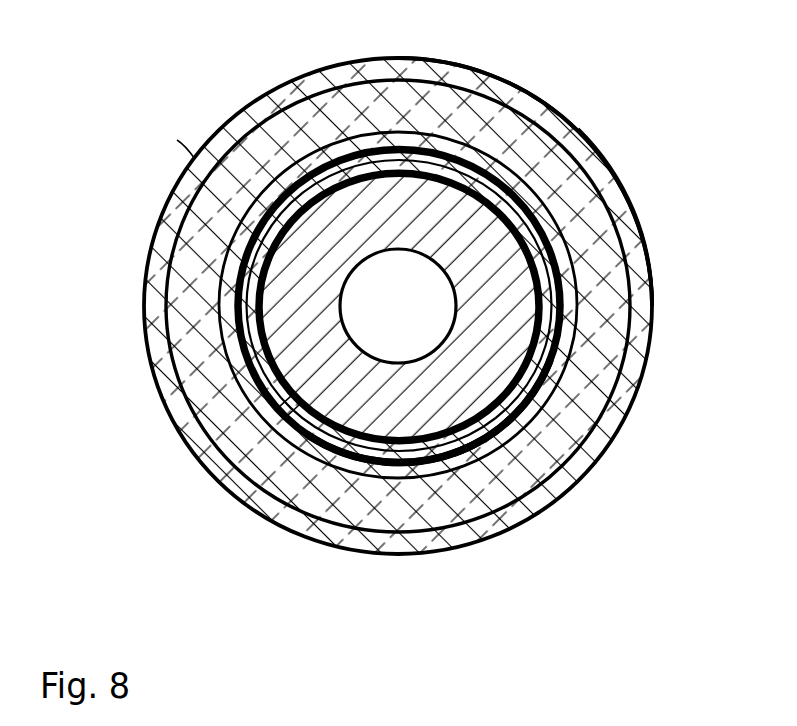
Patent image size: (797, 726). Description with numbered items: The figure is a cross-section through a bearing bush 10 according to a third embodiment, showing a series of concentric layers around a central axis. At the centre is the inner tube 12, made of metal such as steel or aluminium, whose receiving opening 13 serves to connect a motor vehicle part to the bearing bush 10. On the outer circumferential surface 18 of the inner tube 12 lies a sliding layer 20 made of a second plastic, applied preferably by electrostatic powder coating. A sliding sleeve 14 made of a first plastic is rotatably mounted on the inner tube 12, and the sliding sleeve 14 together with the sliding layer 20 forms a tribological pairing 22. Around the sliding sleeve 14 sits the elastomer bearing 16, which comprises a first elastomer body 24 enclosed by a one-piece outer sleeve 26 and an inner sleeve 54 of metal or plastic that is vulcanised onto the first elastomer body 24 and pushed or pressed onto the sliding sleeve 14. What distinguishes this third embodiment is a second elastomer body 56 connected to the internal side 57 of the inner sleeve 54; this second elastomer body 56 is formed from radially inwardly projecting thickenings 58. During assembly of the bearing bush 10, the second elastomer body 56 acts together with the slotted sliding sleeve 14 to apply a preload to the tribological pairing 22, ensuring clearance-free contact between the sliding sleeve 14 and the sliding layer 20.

The bearing bush 10 is at (553, 78).
The inner tube 12 is at (493, 257).
The receiving opening 13 is at (363, 298).
The sliding sleeve 14 is at (562, 302).
The elastomer bearing 16 is at (614, 128).
The outer circumferential surface 18 is at (528, 363).
The sliding layer 20 is at (250, 331).
The tribological pairing 22 is at (533, 398).
The first elastomer body 24 is at (398, 100).
The outer sleeve 26 is at (287, 95).
The inner sleeve 54 is at (490, 448).
The second elastomer body 56 is at (467, 453).
The internal side 57 is at (350, 457).
The thickenings 58 is at (300, 162).